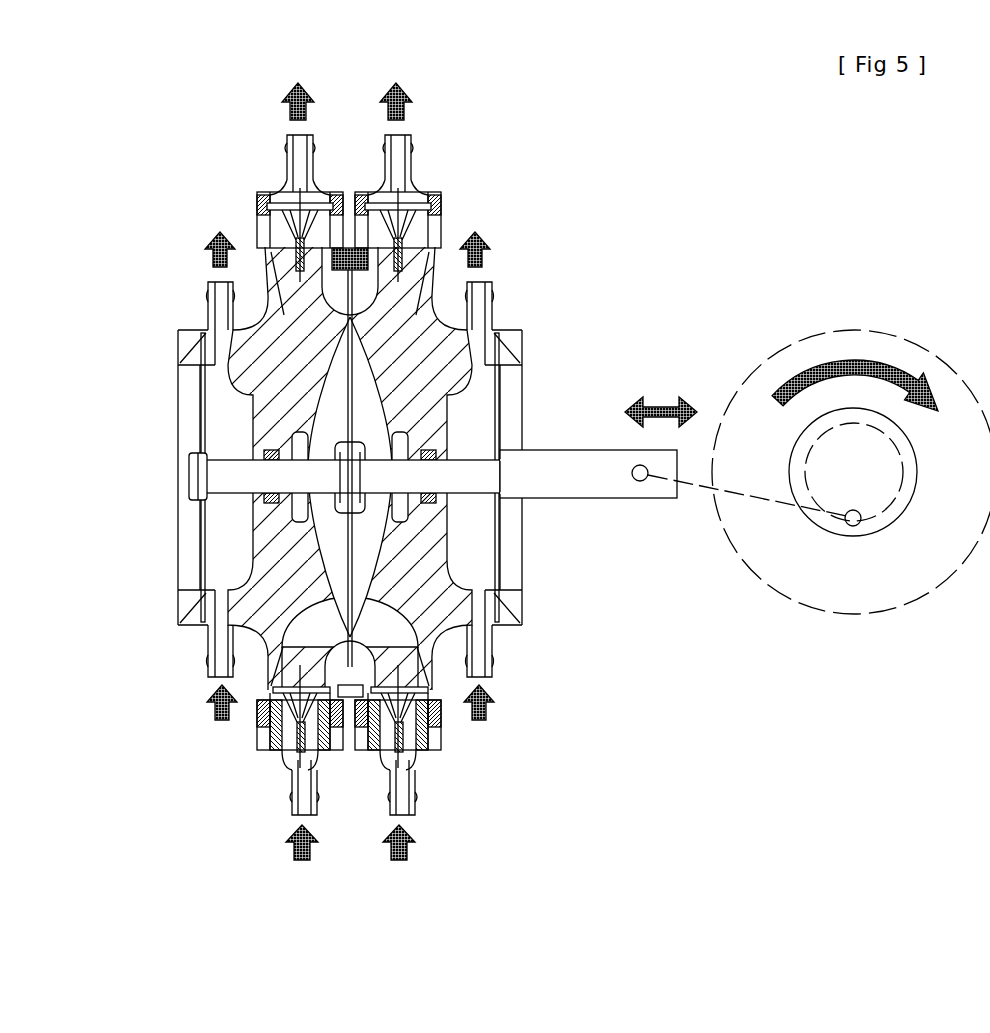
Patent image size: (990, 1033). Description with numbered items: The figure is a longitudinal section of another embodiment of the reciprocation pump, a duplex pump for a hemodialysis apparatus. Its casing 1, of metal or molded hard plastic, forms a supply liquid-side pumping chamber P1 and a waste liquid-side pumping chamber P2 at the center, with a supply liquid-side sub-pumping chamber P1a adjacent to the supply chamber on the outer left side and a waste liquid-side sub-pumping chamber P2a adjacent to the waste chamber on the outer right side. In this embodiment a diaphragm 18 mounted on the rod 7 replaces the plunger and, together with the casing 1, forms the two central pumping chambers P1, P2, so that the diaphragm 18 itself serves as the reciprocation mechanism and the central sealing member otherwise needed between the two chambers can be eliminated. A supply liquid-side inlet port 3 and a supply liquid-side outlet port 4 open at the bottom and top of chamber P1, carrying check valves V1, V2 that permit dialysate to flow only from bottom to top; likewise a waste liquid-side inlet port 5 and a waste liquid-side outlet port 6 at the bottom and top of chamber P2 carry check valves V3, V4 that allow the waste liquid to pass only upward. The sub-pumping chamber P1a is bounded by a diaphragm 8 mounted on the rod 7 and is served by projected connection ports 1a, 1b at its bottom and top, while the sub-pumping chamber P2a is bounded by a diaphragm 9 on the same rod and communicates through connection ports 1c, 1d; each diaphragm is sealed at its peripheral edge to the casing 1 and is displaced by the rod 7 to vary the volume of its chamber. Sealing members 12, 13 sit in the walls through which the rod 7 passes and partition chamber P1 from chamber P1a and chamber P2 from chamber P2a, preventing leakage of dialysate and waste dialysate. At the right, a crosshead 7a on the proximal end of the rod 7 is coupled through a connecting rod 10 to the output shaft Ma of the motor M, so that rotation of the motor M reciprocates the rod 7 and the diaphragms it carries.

The casing 1 is at (178, 338).
The connection port 1a is at (208, 655).
The connection port 1b is at (208, 316).
The connection port 1c is at (494, 654).
The connection port 1d is at (494, 305).
The supply liquid-side inlet port 3 is at (293, 788).
The supply liquid-side outlet port 4 is at (288, 158).
The waste liquid-side inlet port 5 is at (417, 796).
The waste liquid-side outlet port 6 is at (412, 148).
The rod 7 is at (215, 471).
The crosshead 7a is at (666, 499).
The diaphragm 8 is at (203, 388).
The diaphragm 9 is at (503, 380).
The connecting rod 10 is at (746, 528).
The sealing member 12 is at (268, 497).
The sealing member 13 is at (435, 500).
The diaphragm 18 is at (347, 545).
The check valve V1 is at (295, 740).
The check valve V2 is at (262, 210).
The check valve V3 is at (425, 756).
The check valve V4 is at (428, 194).
The motor M is at (930, 352).
The output shaft Ma is at (790, 446).
The supply liquid-side pumping chamber P1 is at (329, 477).
The waste liquid-side pumping chamber P2 is at (371, 477).
The supply liquid-side sub-pumping chamber P1a is at (229, 477).
The waste liquid-side sub-pumping chamber P2a is at (471, 477).